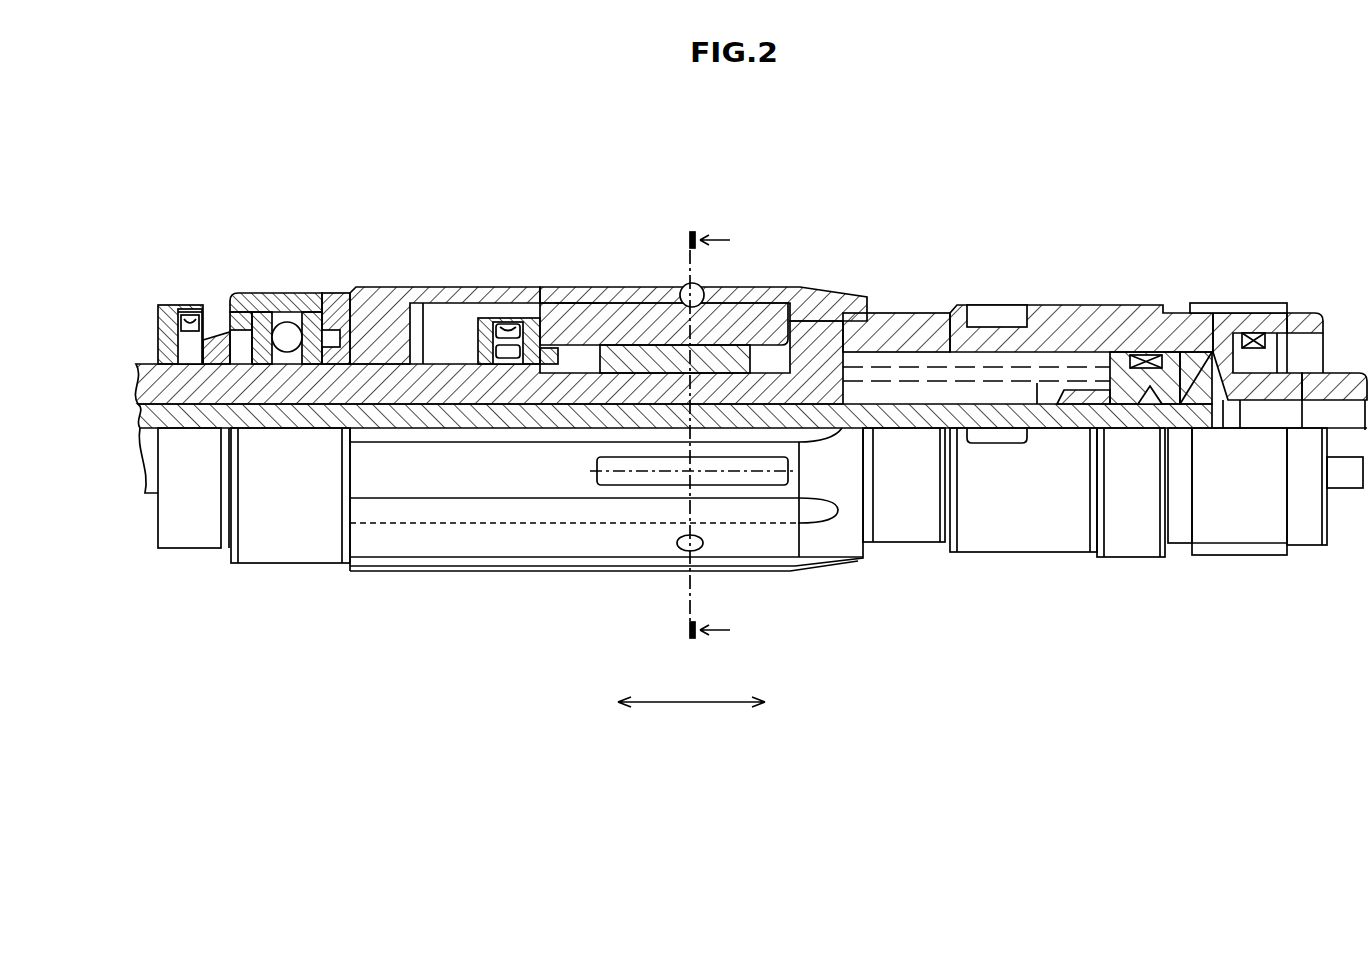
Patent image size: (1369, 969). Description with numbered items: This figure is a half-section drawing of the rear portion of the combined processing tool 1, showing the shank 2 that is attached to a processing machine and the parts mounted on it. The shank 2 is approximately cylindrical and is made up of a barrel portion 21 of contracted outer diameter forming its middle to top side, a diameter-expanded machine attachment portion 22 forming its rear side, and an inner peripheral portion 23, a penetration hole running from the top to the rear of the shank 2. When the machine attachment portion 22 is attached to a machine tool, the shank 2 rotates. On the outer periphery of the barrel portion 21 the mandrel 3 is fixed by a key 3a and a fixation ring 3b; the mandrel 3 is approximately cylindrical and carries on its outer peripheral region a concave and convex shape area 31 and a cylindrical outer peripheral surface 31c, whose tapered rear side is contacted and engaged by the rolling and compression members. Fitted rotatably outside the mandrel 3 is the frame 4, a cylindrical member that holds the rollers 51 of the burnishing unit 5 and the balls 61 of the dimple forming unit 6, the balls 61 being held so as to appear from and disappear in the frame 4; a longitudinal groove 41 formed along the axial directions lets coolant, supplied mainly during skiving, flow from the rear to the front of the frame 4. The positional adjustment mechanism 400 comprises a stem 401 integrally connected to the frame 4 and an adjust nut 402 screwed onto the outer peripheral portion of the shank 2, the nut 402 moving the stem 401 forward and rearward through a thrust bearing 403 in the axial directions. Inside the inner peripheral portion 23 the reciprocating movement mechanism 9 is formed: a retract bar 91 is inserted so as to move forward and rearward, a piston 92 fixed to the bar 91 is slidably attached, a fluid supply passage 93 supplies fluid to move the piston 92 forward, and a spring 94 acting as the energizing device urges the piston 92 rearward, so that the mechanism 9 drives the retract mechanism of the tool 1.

The combined processing tool 1 is at (1010, 270).
The shank 2 is at (751, 412).
The barrel portion 21 is at (440, 380).
The machine attachment portion 22 is at (1060, 306).
The inner peripheral portion 23 is at (287, 430).
The mandrel 3 is at (800, 287).
The key 3a is at (757, 315).
The fixation ring 3b is at (488, 316).
The concave and convex shape area 31 is at (663, 318).
The outer peripheral surface 31c is at (568, 288).
The frame 4 is at (503, 288).
The longitudinal groove 41 is at (750, 515).
The burnishing unit 5 is at (661, 551).
The roller 51 is at (622, 476).
The dimple forming unit 6 is at (719, 417).
The ball 61 is at (683, 287).
The reciprocating movement mechanism 9 is at (1290, 600).
The retract bar 91 is at (911, 428).
The piston 92 is at (1165, 417).
The fluid supply passage 93 is at (1240, 430).
The spring 94 is at (1038, 430).
The positional adjustment mechanism 400 is at (342, 236).
The stem 401 is at (328, 292).
The adjust nut 402 is at (217, 312).
The thrust bearing 403 is at (280, 320).